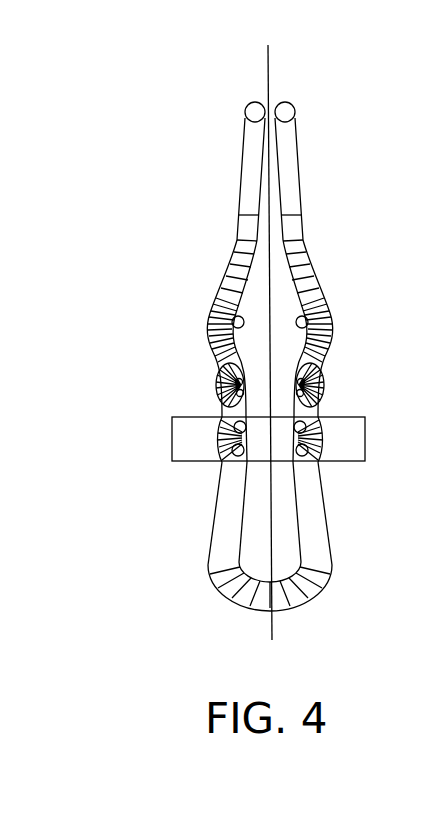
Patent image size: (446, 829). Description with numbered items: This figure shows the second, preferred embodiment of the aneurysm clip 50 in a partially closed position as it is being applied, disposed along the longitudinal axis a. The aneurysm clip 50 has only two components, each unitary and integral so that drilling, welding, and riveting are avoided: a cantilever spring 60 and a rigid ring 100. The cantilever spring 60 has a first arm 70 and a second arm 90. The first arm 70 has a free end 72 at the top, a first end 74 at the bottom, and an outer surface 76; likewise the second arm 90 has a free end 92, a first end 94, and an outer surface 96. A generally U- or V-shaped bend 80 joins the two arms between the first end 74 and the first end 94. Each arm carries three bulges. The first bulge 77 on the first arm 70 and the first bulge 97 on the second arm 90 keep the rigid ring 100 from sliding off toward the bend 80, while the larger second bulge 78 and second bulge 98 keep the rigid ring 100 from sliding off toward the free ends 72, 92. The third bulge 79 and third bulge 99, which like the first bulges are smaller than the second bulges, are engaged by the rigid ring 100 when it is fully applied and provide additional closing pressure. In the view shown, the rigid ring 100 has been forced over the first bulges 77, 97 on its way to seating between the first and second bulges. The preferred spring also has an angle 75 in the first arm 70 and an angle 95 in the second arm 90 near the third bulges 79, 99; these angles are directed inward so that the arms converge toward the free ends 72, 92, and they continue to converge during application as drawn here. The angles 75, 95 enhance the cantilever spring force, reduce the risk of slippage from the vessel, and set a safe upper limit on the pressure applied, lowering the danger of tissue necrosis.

The longitudinal axis a is at (270, 57).
The aneurysm clip 50 is at (147, 288).
The cantilever spring 60 is at (323, 558).
The first arm 70 is at (244, 190).
The free end 72 is at (251, 103).
The first end 74 is at (220, 470).
The angle 75 is at (222, 310).
The outer surface 76 is at (231, 240).
The first bulge 77 is at (220, 447).
The second bulge 78 is at (207, 343).
The third bulge 79 is at (216, 392).
The bend 80 is at (293, 598).
The second arm 90 is at (302, 187).
The free end 92 is at (291, 101).
The first end 94 is at (323, 470).
The angle 95 is at (320, 308).
The outer surface 96 is at (313, 273).
The first bulge 97 is at (325, 432).
The second bulge 98 is at (335, 337).
The third bulge 99 is at (324, 387).
The rigid ring 100 is at (353, 442).